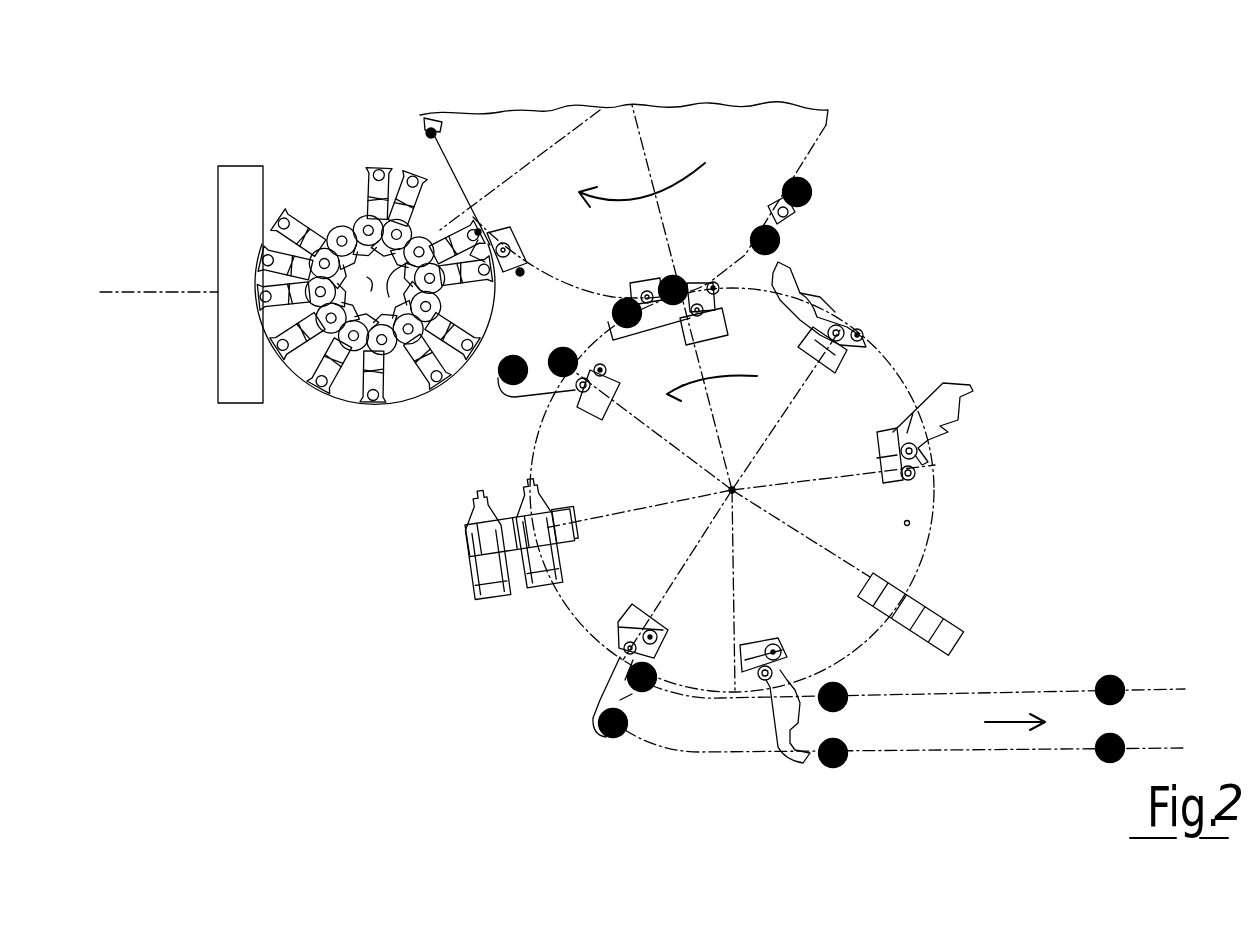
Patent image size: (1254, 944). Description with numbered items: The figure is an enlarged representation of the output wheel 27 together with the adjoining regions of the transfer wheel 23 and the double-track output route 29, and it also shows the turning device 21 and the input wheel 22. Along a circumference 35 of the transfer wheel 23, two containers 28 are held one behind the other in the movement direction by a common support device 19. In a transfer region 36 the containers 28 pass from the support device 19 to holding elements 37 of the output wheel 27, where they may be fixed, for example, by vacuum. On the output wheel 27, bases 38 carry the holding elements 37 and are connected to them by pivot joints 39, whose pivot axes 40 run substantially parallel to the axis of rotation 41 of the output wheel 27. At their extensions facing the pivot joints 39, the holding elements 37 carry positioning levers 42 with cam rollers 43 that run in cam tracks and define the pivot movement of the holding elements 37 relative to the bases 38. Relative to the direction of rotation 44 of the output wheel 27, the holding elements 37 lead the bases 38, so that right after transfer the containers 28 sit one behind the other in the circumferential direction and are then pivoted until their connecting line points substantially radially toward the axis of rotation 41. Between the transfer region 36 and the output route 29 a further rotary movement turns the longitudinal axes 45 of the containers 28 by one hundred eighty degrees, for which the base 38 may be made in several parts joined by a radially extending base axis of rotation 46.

The support device 19 is at (520, 274).
The turning device 21 is at (245, 397).
The input wheel 22 is at (350, 390).
The transfer wheel 23 is at (793, 153).
The output wheel 27 is at (909, 523).
The containers 28 is at (812, 193).
The output route 29 is at (1045, 705).
The circumference 35 is at (830, 122).
The transfer region 36 is at (644, 247).
The holding elements 37 is at (937, 432).
The bases 38 is at (900, 420).
The pivot joints 39 is at (930, 457).
The pivot axes 40 is at (836, 325).
The axis of rotation 41 is at (734, 491).
The positioning levers 42 is at (857, 337).
The cam rollers 43 is at (863, 330).
The direction of rotation 44 is at (692, 380).
The longitudinal axes 45 is at (480, 522).
The base axis of rotation 46 is at (572, 540).